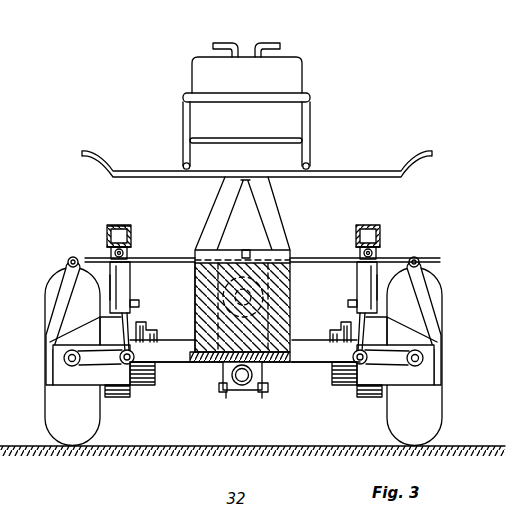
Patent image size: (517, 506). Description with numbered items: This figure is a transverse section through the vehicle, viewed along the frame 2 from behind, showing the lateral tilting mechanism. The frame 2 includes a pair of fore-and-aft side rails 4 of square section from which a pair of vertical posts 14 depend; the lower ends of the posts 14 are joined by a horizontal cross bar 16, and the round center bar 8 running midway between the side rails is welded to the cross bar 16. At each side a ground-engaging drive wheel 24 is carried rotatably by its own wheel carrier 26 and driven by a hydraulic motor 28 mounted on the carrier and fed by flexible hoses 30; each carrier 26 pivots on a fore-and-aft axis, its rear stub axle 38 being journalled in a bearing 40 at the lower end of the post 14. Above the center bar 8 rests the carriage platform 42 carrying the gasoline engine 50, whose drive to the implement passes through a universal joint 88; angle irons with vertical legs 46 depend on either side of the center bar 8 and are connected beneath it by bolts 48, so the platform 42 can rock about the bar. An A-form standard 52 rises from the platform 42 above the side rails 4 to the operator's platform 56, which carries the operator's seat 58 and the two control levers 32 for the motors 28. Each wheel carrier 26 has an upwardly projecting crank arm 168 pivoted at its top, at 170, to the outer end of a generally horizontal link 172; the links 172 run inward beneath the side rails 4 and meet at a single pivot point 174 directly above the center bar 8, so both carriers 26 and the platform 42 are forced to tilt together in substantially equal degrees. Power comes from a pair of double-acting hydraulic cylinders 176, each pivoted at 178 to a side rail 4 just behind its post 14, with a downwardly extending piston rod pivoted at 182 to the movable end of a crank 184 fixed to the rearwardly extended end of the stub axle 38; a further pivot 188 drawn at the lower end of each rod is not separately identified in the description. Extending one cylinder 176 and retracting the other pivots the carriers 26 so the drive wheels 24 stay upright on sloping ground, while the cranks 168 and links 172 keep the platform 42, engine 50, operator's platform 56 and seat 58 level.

The vehicle frame 2 is at (112, 226).
The side rails 4 is at (126, 228).
The center bar 8 is at (238, 391).
The vertical posts 14 is at (108, 256).
The horizontal cross bar 16 is at (321, 362).
The drive wheel 24 is at (52, 414).
The wheel carrier 26 is at (118, 398).
The hydraulic motor 28 is at (145, 386).
The flexible hoses 30 is at (146, 330).
The control levers 32 is at (254, 47).
The stub axle 38 is at (63, 355).
The bearing 40 is at (54, 374).
The carriage platform 42 is at (192, 361).
The vertical parallel legs 46 is at (221, 393).
The bolts 48 is at (249, 390).
The gasoline engine 50 is at (291, 293).
The upstanding standard 52 is at (216, 215).
The operator's platform 56 is at (268, 178).
The operator's seat 58 is at (300, 73).
The universal joint 88 is at (195, 303).
The crank arm 168 is at (72, 292).
The pivot 170 is at (68, 261).
The horizontal link 172 is at (175, 257).
The pivot point 174 is at (245, 250).
The double-acting hydraulic cylinder 176 is at (132, 292).
The pivot 178 is at (108, 244).
The pivot 182 is at (117, 364).
The crank 184 is at (64, 337).
The rod pivot 188 is at (126, 350).